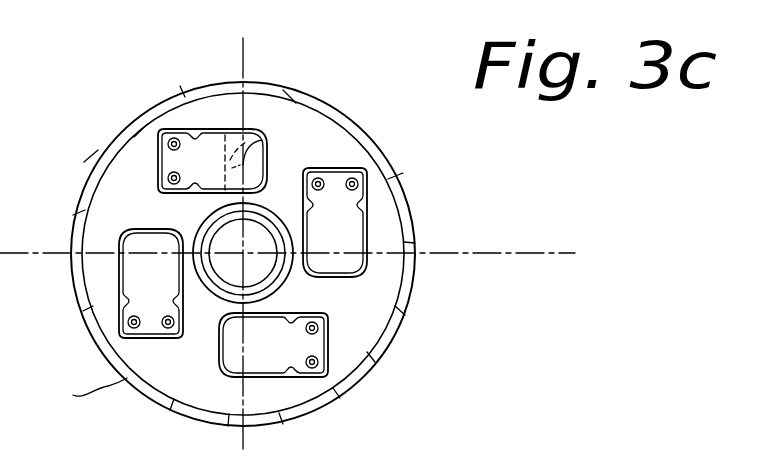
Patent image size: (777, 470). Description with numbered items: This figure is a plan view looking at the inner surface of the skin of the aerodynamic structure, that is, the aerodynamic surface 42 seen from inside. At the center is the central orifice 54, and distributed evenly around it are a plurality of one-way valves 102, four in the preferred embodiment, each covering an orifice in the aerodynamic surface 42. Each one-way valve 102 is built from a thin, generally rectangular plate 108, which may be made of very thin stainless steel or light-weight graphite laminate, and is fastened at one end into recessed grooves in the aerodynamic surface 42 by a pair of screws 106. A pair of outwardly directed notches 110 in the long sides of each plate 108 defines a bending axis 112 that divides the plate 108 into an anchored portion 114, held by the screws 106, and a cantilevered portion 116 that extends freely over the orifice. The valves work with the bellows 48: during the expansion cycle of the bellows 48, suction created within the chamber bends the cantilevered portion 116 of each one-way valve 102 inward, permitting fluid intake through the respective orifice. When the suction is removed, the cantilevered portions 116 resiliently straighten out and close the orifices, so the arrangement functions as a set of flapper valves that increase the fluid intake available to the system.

The aerodynamic surface 42 is at (316, 143).
The bellows 48 is at (71, 395).
The central orifice 54 is at (240, 252).
The one-way valve 102 is at (273, 343).
The screws 106 is at (402, 199).
The plate 108 is at (342, 228).
The notches 110 is at (193, 140).
The bending axis 112 is at (225, 132).
The anchored portion 114 is at (179, 111).
The cantilevered portion 116 is at (232, 164).